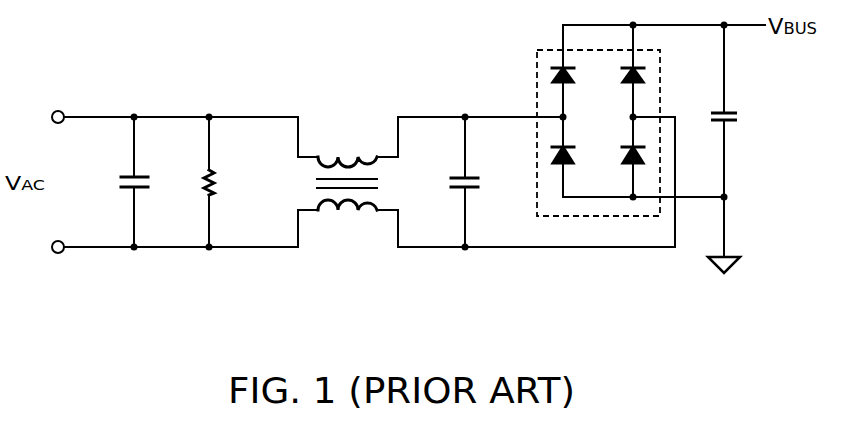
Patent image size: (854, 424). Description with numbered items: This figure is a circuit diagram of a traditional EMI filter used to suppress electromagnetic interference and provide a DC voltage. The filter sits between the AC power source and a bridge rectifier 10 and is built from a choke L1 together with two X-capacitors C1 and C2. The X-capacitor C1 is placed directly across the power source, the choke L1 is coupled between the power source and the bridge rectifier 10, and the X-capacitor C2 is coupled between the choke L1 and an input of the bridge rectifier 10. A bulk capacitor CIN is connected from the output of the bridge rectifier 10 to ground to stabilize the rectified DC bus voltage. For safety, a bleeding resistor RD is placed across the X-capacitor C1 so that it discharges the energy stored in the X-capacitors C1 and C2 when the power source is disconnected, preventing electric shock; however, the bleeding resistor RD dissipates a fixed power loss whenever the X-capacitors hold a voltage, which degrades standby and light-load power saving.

The bridge rectifier 10 is at (592, 216).
The X-capacitor C1 is at (116, 182).
The bleeding resistor RD is at (229, 182).
The choke L1 is at (347, 166).
The X-capacitor C2 is at (483, 182).
The bulk capacitor CIN is at (747, 116).